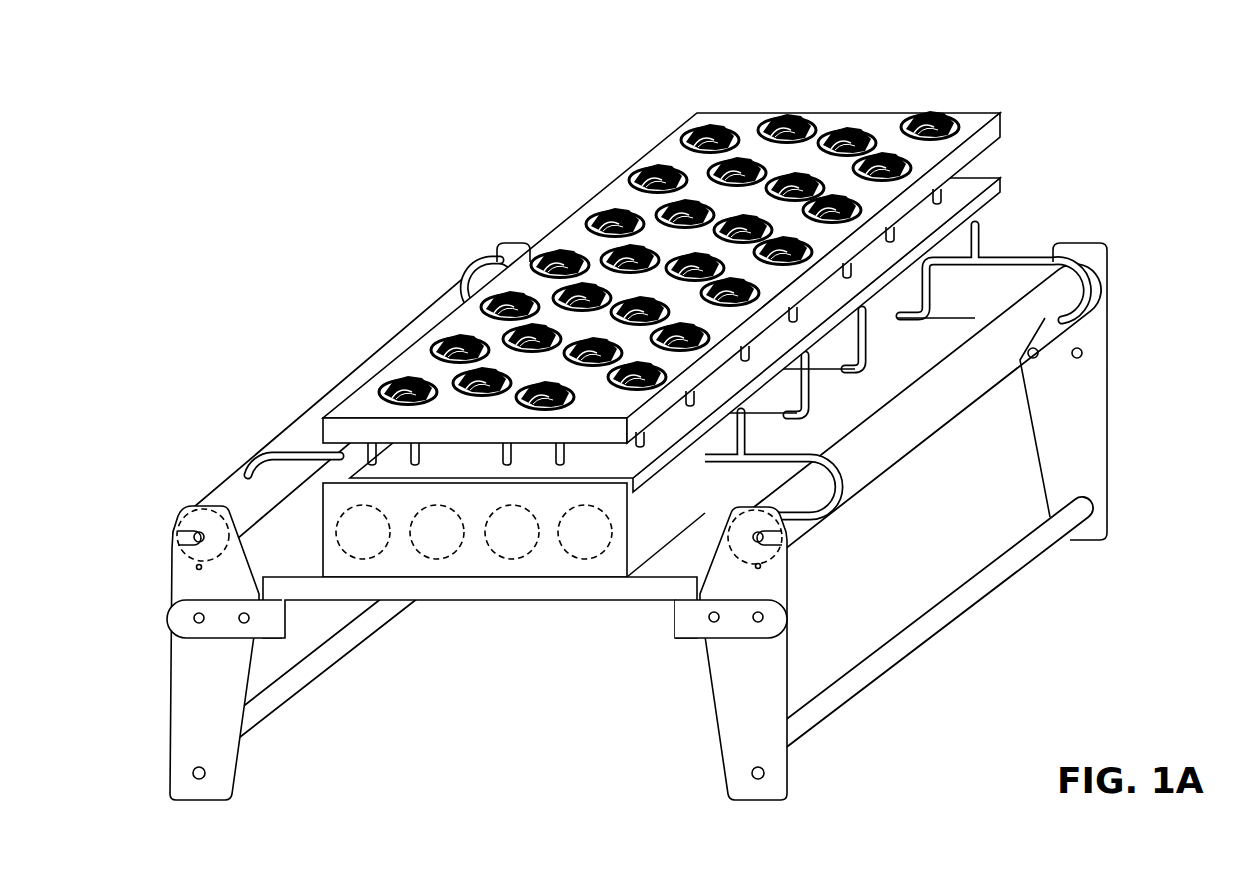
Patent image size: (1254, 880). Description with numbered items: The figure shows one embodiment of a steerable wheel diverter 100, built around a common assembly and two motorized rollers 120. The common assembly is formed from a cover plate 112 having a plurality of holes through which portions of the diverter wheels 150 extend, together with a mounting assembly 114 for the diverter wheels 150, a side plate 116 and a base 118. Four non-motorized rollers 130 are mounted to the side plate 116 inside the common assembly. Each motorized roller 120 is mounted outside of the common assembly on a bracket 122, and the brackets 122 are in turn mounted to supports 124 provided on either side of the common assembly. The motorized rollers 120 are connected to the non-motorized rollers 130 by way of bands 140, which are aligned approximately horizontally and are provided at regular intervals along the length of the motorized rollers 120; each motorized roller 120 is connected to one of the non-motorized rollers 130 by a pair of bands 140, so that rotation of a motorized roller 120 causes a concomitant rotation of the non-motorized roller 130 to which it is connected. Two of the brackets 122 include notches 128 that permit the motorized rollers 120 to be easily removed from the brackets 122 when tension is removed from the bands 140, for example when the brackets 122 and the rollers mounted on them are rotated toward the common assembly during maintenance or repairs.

The steerable wheel diverter 100 is at (634, 424).
The cover plate 112 is at (872, 118).
The mounting assembly 114 is at (1008, 180).
The side plate 116 is at (552, 562).
The base 118 is at (673, 610).
The motorized roller 120 is at (233, 487).
The bracket 122 is at (510, 240).
The support 124 is at (250, 617).
The notch 128 is at (185, 556).
The non-motorized roller 130 is at (360, 540).
The band 140 is at (466, 284).
The diverter wheel 150 is at (709, 345).